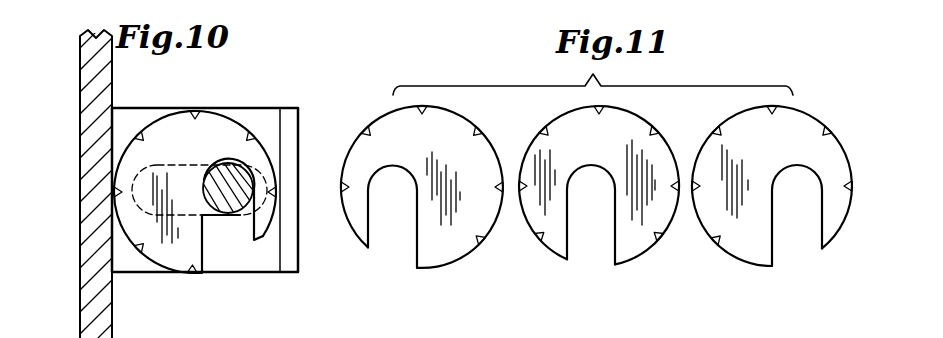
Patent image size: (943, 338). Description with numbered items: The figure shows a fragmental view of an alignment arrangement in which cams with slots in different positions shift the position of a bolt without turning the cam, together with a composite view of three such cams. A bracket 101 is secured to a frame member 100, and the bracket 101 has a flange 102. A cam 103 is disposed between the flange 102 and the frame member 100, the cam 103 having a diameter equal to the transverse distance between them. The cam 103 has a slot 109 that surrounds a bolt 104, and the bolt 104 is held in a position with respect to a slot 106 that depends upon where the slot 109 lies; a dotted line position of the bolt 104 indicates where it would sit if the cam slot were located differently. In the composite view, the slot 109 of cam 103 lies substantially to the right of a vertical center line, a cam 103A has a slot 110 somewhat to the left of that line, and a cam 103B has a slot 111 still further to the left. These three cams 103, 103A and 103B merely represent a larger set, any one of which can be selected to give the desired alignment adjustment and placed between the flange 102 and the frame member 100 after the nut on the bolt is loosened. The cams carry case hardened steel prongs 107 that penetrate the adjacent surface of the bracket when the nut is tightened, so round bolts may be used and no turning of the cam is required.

In FIG. 10, the frame member 100 is at (85, 174).
In FIG. 10, the bracket 101 is at (258, 274).
In FIG. 10, the flange 102 is at (298, 252).
In FIG. 10, the cam 103 is at (183, 155).
In FIG. 11, the cam 103 is at (778, 155).
In FIG. 11, the cam 103A is at (620, 145).
In FIG. 11, the cam 103B is at (446, 145).
In FIG. 10, the bolt 104 is at (228, 167).
In FIG. 10, the slot 106 is at (243, 223).
In FIG. 10, the prongs 107 is at (250, 134).
In FIG. 11, the prongs 107 is at (428, 107).
In FIG. 10, the slot 109 is at (253, 271).
In FIG. 11, the slot 109 is at (796, 240).
In FIG. 11, the slot 110 is at (592, 242).
In FIG. 11, the slot 111 is at (401, 248).